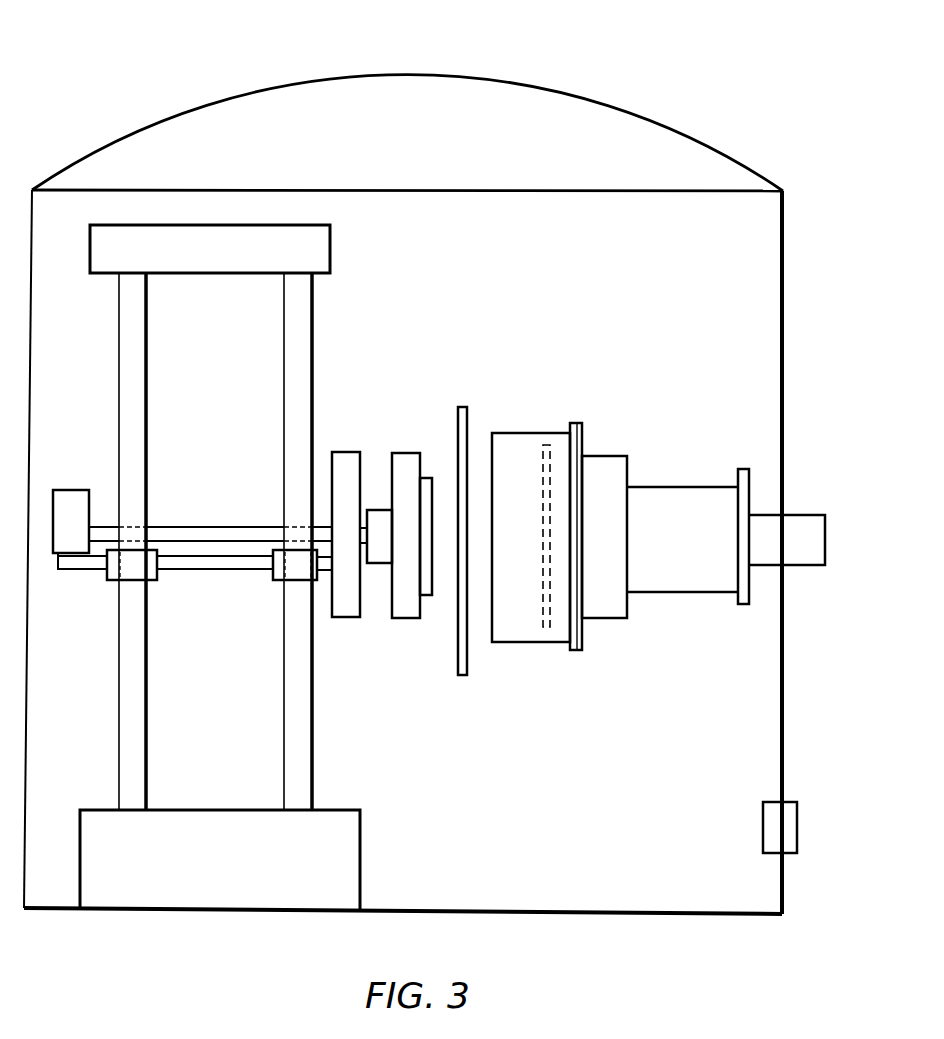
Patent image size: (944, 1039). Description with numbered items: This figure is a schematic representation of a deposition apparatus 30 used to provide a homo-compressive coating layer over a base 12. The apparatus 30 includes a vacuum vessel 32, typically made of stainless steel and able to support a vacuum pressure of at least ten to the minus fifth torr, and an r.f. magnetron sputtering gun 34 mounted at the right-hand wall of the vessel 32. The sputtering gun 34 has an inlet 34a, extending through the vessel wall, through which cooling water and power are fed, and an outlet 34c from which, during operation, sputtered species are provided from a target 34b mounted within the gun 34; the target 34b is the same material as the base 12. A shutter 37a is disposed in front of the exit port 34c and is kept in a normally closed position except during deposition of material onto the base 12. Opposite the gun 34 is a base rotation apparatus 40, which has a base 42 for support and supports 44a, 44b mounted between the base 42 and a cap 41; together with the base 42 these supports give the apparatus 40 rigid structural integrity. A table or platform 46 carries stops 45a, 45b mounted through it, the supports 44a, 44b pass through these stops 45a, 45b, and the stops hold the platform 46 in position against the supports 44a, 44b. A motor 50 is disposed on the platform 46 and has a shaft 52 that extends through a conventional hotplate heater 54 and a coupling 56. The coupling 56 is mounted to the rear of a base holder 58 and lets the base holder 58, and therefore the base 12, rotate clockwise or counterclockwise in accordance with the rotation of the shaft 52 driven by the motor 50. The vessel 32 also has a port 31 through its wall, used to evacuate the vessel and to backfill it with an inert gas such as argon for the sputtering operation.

The apparatus 30 is at (143, 85).
The port 31 is at (797, 815).
The vacuum vessel 32 is at (784, 239).
The r.f. magnetron sputtering gun 34 is at (609, 455).
The inlet 34a is at (803, 514).
The target 34b is at (542, 600).
The outlet 34c is at (492, 614).
The shutter 37a is at (468, 433).
The base 12 is at (433, 585).
The base rotation apparatus 40 is at (87, 722).
The cap 41 is at (332, 240).
The base 42 is at (80, 838).
The support 44a is at (118, 666).
The support 44b is at (281, 676).
The stop 45a is at (108, 582).
The stop 45b is at (273, 582).
The platform 46 is at (82, 570).
The motor 50 is at (70, 490).
The shaft 52 is at (170, 526).
The hotplate heater 54 is at (346, 452).
The coupling 56 is at (378, 510).
The base holder 58 is at (421, 468).